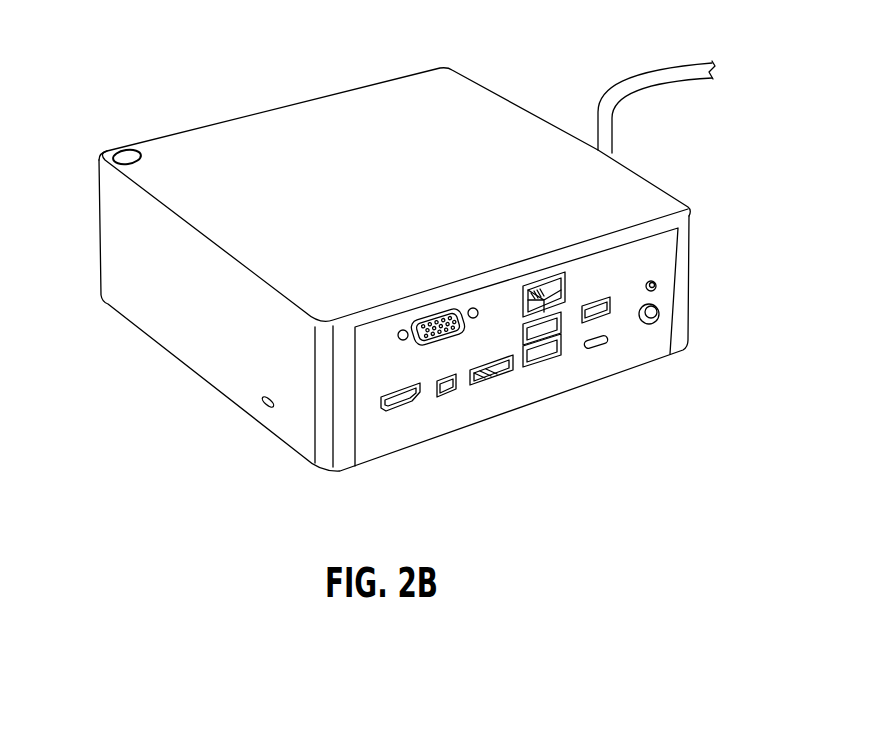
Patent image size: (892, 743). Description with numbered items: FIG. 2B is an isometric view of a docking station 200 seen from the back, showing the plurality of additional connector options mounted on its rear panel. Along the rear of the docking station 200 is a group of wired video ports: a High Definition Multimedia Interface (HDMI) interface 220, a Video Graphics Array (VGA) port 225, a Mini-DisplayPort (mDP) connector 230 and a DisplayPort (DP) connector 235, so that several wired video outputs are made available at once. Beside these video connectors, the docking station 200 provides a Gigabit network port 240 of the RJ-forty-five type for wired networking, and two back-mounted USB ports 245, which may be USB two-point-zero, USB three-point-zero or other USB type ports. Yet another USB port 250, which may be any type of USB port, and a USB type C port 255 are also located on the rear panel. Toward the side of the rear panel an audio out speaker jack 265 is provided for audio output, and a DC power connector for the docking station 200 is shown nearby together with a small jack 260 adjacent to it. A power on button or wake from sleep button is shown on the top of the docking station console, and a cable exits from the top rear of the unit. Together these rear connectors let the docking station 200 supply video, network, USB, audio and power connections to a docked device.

The docking station 200 is at (232, 117).
The High Definition Multimedia Interface (HDMI) interface 220 is at (405, 411).
The Video Graphics Array (VGA) port 225 is at (430, 310).
The Mini-DisplayPort (mDP) connector 230 is at (458, 390).
The DisplayPort (DP) connector 235 is at (513, 381).
The RJ-45 Gigabit network port 240 is at (540, 276).
The USB ports 245 is at (561, 357).
The USB port 250 is at (606, 298).
The USB type C port 255 is at (606, 346).
The audio jack 260 is at (657, 278).
The audio out speaker jack 265 is at (660, 316).